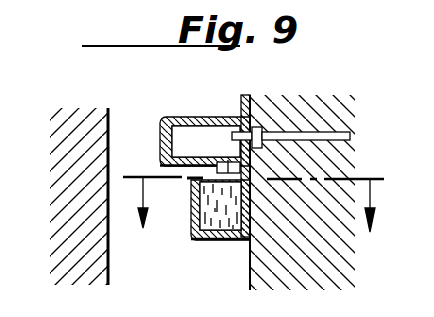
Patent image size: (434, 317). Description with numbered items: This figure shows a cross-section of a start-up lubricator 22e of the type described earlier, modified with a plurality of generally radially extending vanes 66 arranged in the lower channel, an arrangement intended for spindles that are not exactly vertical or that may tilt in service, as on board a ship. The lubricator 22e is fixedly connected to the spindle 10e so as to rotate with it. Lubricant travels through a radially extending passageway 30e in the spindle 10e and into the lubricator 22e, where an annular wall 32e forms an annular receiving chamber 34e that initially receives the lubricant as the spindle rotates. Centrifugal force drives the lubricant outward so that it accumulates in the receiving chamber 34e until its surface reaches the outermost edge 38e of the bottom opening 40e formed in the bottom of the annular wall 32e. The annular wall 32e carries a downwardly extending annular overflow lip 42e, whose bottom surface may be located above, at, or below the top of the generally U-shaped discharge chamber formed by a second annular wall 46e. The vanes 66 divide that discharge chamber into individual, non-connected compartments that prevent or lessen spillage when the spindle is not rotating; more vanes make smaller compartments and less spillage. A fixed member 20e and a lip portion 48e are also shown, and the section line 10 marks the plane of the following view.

The first panel / wall member 20e is at (80, 135).
The spindle 10e is at (327, 112).
The annular receiving chamber 34e is at (246, 116).
The annular wall 32e is at (168, 116).
The outermost edge of bottom opening 38e is at (236, 159).
The bottom opening 40e is at (229, 170).
The radially extending passageway 30e is at (341, 134).
The annular overflow lip 42e is at (163, 152).
The hook lip 48e is at (192, 180).
The annular wall 46e is at (227, 243).
The vanes 66 is at (223, 214).
The start-up lubricator 22e is at (188, 247).
The spindle 10 is at (254, 219).